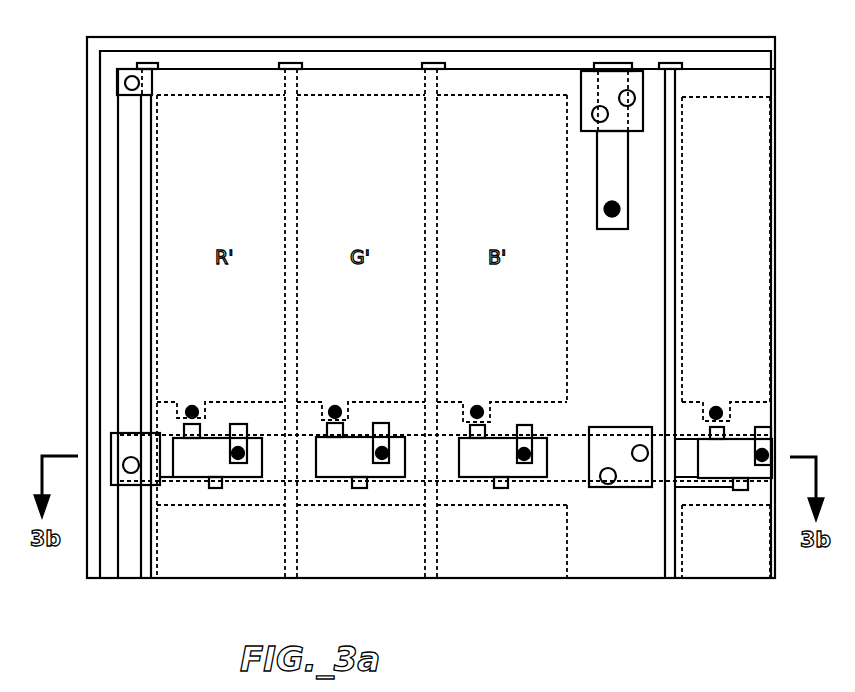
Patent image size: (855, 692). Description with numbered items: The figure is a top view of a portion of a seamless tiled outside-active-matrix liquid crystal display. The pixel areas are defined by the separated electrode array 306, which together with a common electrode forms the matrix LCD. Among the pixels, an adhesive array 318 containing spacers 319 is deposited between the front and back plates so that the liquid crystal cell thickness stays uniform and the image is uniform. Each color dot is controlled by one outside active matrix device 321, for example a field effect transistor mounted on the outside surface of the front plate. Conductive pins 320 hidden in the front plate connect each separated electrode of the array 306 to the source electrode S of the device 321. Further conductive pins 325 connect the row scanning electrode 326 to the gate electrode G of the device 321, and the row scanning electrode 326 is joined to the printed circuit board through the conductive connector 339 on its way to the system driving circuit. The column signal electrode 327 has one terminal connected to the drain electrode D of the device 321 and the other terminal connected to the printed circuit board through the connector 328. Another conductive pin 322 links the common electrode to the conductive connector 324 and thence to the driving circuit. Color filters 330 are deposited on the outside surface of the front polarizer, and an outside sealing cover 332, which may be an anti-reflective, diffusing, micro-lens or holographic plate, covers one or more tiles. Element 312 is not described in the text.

The separated electrode array 306 is at (228, 550).
The gate line pad 312 is at (635, 540).
The adhesive array 318 is at (626, 459).
The spacers 319 is at (640, 461).
The conductive pins 320 is at (478, 418).
The outside active matrix device 321 is at (742, 443).
The conductive pin 322 is at (605, 205).
The conductive connector 324 is at (615, 69).
The conductive pins 325 is at (524, 456).
The row scanning electrode 326 is at (415, 475).
The column signal electrode 327 is at (145, 568).
The connector 328 is at (117, 83).
The color filters 330 is at (213, 567).
The outside sealing cover 332 is at (93, 567).
The conductive connector 339 is at (111, 447).
The gate electrode G is at (240, 424).
The source electrode S is at (183, 418).
The drain electrode D is at (215, 488).